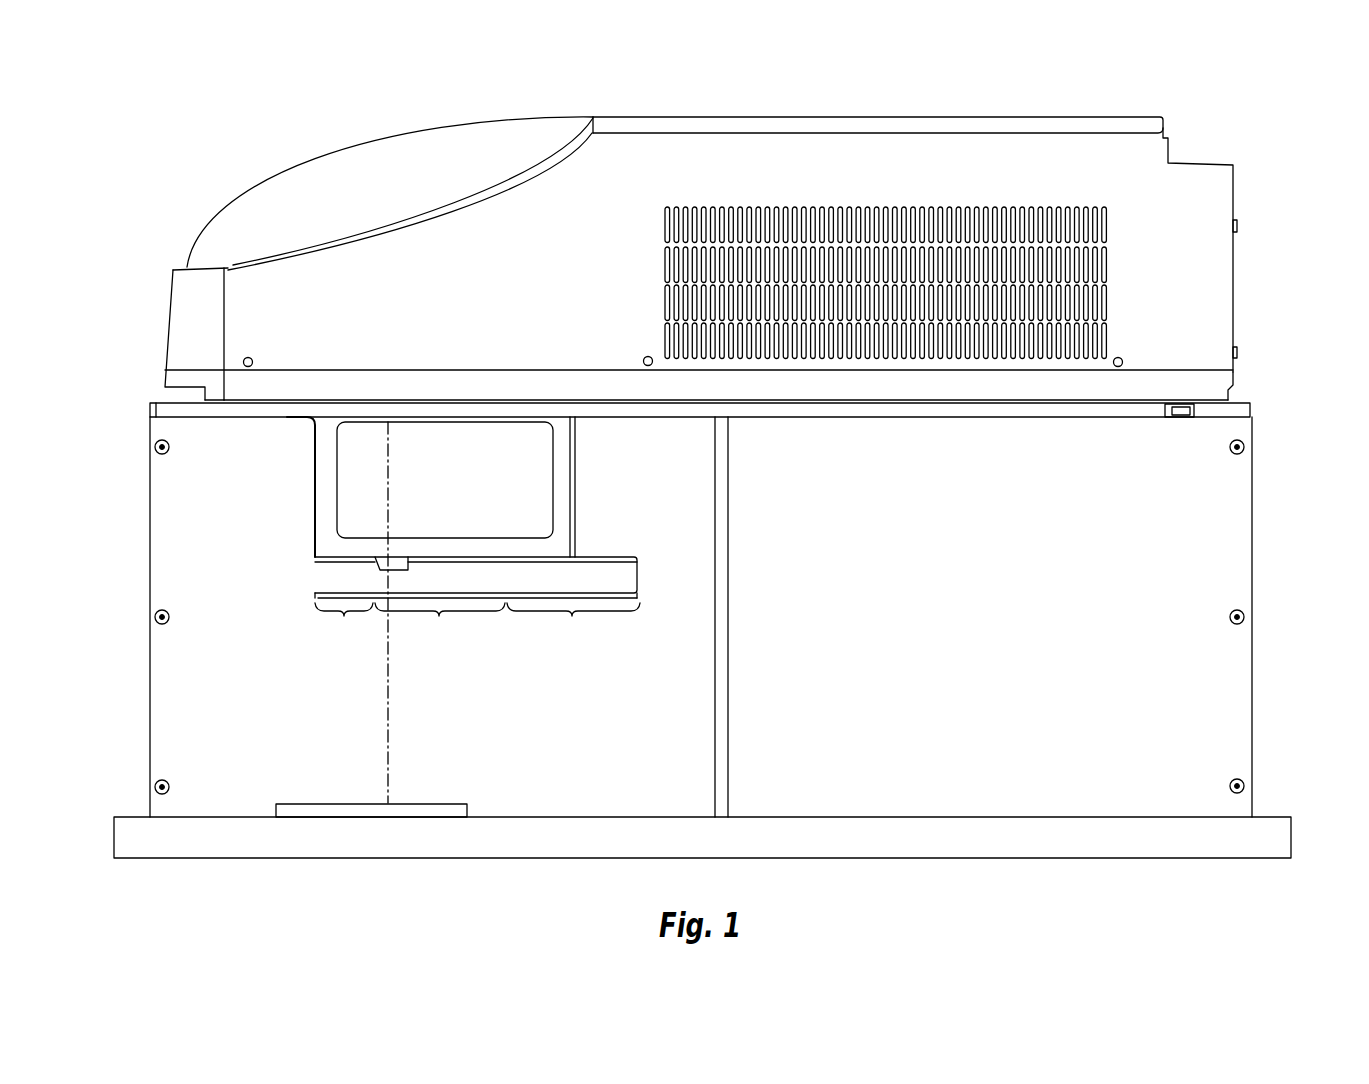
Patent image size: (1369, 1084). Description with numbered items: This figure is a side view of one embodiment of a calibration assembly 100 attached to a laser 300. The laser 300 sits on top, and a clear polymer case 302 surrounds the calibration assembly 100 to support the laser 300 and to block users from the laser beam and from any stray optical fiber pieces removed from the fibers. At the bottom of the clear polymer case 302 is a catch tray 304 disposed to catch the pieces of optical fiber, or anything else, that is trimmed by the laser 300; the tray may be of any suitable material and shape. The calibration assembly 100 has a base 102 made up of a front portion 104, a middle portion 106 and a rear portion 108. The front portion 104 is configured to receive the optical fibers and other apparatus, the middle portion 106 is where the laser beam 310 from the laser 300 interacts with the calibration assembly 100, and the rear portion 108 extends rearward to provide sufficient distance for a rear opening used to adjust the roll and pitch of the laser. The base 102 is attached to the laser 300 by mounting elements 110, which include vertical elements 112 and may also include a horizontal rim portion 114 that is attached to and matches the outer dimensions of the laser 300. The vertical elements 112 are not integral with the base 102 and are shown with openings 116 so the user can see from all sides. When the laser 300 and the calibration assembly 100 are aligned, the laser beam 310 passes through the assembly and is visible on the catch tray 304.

The calibration assembly 100 is at (257, 530).
The base 102 is at (642, 580).
The front portion 104 is at (344, 624).
The middle portion 106 is at (440, 624).
The rear portion 108 is at (573, 624).
The mounting elements 110 is at (288, 421).
The vertical elements 112 is at (562, 492).
The horizontal rim portion 114 is at (213, 420).
The openings 116 is at (535, 462).
The laser 300 is at (832, 108).
The clear polymer case 302 is at (1233, 534).
The catch tray 304 is at (438, 803).
The laser beam 310 is at (388, 707).